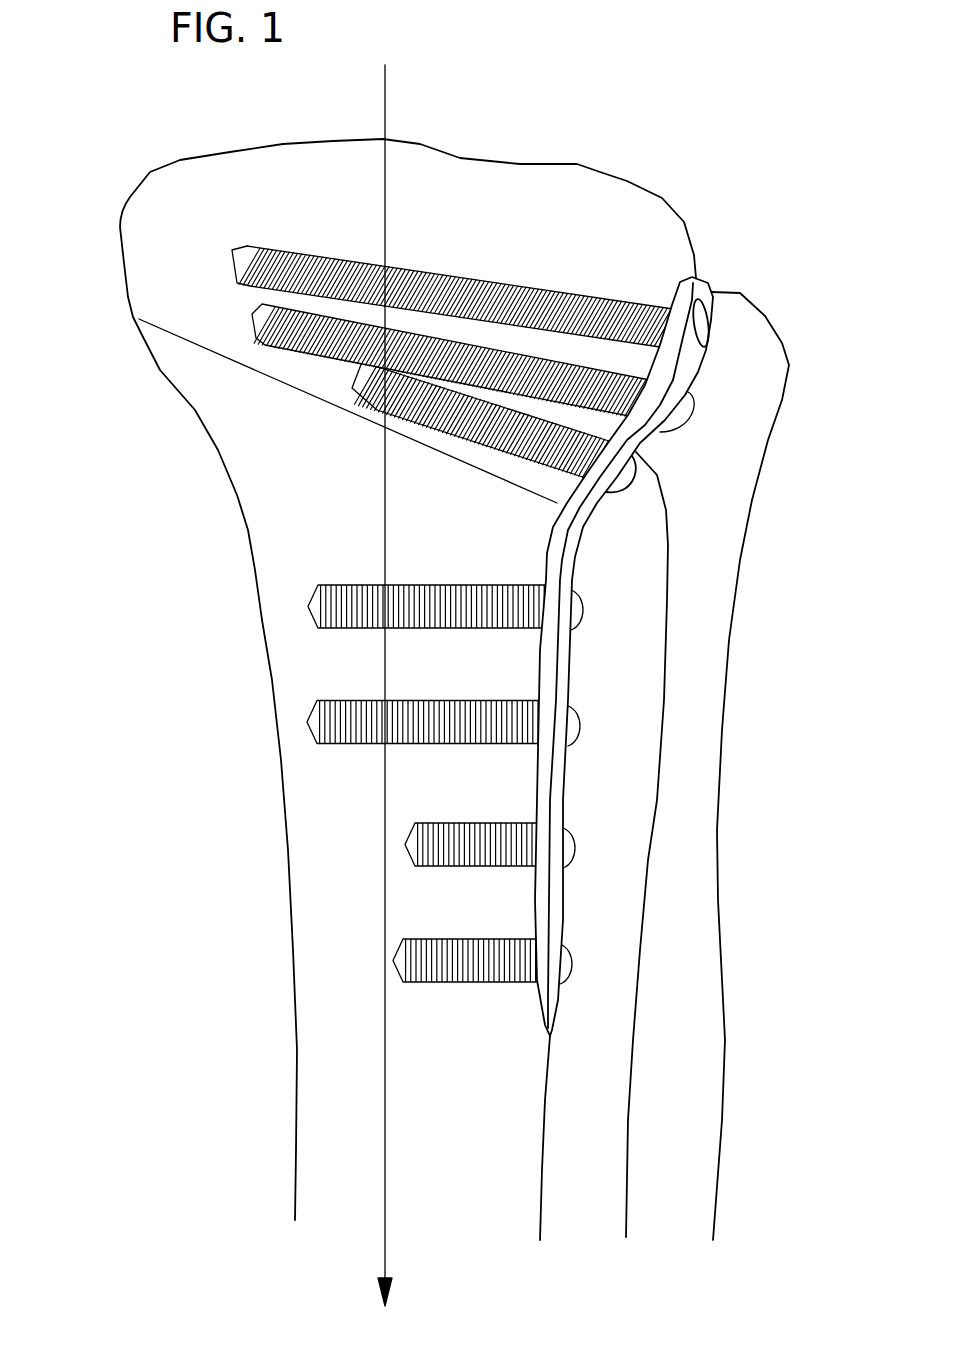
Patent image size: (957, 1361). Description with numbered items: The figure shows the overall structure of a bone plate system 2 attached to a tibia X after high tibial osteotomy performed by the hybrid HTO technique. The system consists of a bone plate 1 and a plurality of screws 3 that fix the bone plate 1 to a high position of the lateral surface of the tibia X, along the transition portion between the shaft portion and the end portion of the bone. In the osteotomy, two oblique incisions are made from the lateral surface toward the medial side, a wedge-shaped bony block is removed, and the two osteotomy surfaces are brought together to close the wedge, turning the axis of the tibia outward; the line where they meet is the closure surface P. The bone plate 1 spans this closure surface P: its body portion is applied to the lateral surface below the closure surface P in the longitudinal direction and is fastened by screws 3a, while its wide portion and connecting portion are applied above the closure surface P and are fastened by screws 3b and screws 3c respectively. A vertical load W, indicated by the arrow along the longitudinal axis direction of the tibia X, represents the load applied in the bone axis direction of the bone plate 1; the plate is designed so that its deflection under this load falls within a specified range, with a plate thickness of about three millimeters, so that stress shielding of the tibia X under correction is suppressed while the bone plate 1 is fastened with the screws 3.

The bone plate 1 is at (690, 367).
The bone plate system 2 is at (709, 109).
The screws 3 is at (50, 225).
The screws 3a is at (305, 606).
The screws 3b is at (281, 246).
The screws 3c is at (257, 319).
The closure surface P is at (320, 398).
The tibia X is at (300, 660).
The vertical load W is at (519, 657).